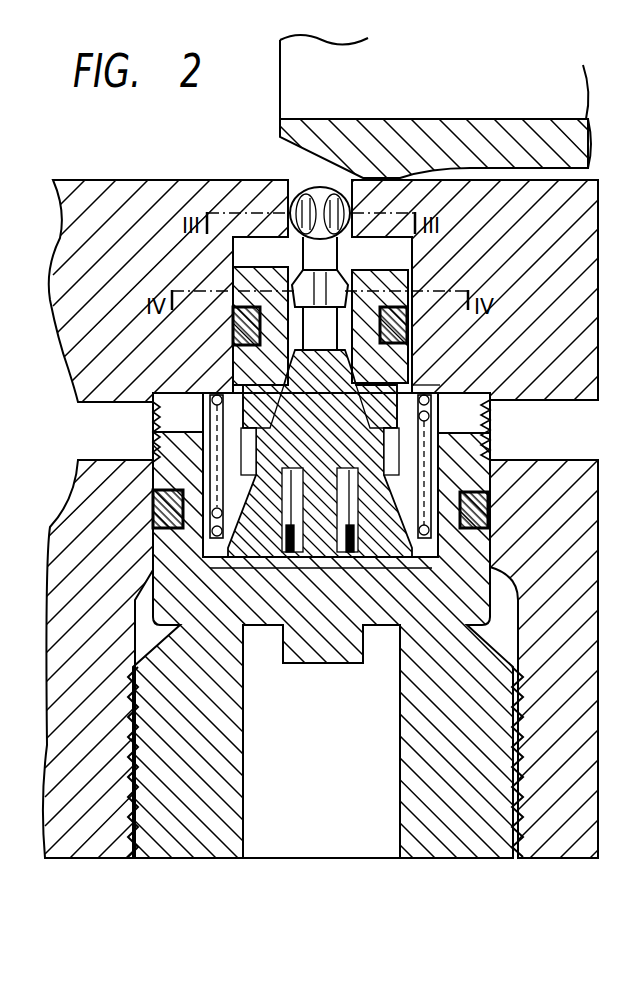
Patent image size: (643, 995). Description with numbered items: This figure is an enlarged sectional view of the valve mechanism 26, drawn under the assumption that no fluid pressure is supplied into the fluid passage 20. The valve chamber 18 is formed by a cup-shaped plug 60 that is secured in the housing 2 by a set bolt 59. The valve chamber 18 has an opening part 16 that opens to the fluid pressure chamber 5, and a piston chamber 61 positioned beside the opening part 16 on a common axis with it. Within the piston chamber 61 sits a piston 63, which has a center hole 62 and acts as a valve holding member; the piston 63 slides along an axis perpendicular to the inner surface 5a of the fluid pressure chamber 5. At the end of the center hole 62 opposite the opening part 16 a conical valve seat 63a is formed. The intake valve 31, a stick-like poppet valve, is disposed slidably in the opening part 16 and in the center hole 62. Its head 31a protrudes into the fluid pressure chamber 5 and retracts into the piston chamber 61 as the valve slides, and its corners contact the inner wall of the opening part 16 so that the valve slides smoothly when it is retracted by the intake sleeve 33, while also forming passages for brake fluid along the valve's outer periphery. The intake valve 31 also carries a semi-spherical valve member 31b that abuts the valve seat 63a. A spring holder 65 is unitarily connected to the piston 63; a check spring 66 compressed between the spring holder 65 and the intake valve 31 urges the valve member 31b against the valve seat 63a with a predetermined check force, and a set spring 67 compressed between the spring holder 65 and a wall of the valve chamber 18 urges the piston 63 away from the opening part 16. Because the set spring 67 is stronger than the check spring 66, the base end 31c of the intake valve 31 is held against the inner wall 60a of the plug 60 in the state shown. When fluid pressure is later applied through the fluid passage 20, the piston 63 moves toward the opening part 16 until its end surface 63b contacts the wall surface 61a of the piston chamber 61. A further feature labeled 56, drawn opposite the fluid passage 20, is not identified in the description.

The housing 2 is at (160, 186).
The fluid pressure chamber 5 is at (153, 147).
The inner surface of the fluid pressure chamber 5a is at (113, 180).
The opening part 16 is at (295, 188).
The valve chamber 18 is at (426, 390).
The fluid passage 20 is at (96, 440).
The valve mechanism 26 is at (412, 333).
The intake valve 31 is at (300, 462).
The head 31a is at (320, 196).
The semi-spherical valve member 31b is at (300, 450).
The base end 31c is at (330, 560).
The intake sleeve 33 is at (486, 124).
The outlet port 56 is at (550, 450).
The set bolt 59 is at (472, 860).
The cup-shaped plug 60 is at (383, 628).
The inner wall of the plug 60a is at (395, 568).
The piston chamber 61 is at (232, 246).
The wall surface of the piston chamber 61a is at (236, 242).
The center hole 62 is at (292, 368).
The piston 63 is at (412, 282).
The conical valve seat 63a is at (375, 475).
The end surface of the piston 63b is at (410, 268).
The spring holder 65 is at (250, 560).
The check spring 66 is at (287, 560).
The set spring 67 is at (455, 393).